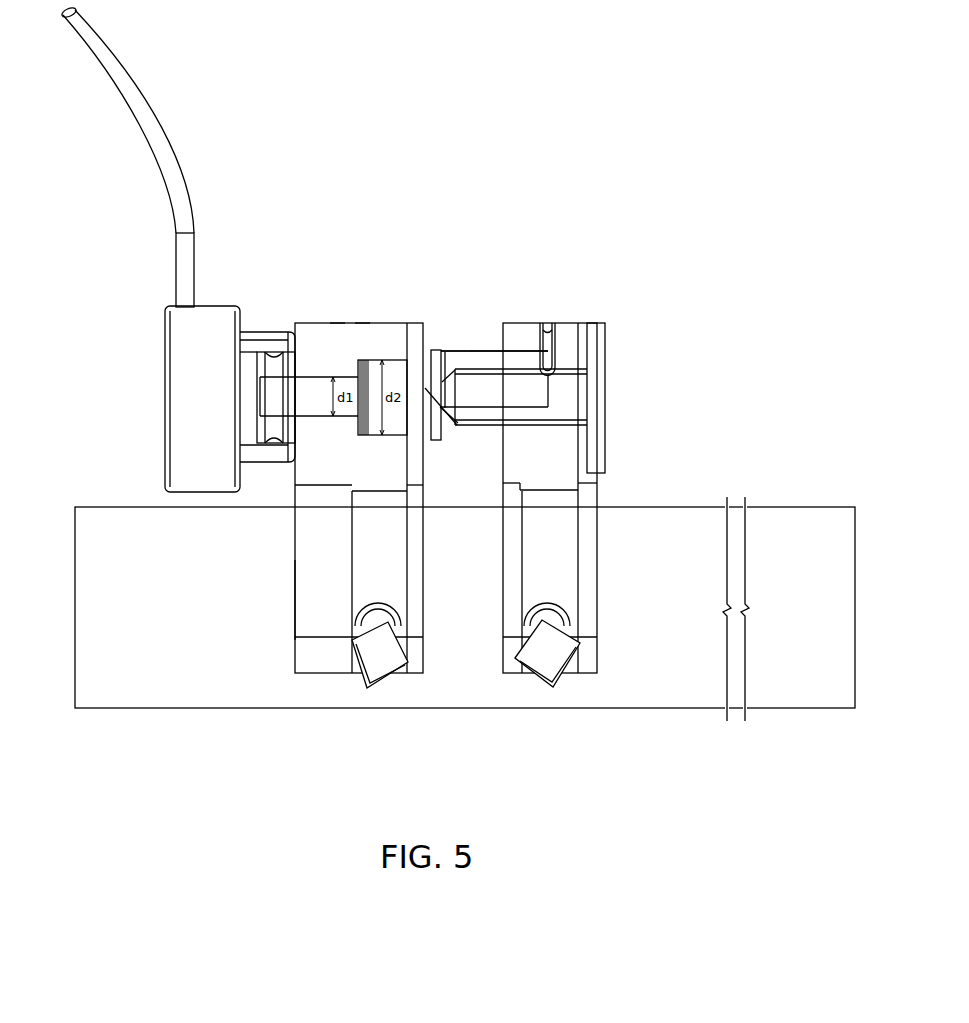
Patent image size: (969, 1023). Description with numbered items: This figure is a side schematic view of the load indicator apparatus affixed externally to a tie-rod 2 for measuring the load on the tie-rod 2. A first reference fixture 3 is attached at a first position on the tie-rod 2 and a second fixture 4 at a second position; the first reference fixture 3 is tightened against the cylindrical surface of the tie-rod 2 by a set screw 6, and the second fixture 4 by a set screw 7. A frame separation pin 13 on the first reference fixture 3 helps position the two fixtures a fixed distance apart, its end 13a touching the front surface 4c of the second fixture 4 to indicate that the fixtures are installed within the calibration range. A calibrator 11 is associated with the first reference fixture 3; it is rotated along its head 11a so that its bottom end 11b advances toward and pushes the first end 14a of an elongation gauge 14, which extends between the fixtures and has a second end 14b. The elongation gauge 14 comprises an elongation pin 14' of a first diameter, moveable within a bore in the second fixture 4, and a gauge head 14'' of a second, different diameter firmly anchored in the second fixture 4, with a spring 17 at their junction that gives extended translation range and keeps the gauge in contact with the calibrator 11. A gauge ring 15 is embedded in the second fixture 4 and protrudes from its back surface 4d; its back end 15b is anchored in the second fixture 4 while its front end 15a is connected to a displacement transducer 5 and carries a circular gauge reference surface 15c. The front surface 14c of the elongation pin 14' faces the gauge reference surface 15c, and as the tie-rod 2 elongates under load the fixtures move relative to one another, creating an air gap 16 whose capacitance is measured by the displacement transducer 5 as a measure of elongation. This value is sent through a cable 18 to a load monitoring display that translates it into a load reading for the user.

The tie-rod 2 is at (658, 711).
The first reference fixture 3 is at (595, 483).
The second fixture 4 is at (312, 673).
The front surface 4c is at (428, 378).
The back surface 4d is at (295, 597).
The displacement transducer 5 is at (211, 303).
The set screw 6 is at (533, 657).
The set screw 7 is at (380, 658).
The calibrator 11 is at (598, 380).
The head 11a is at (605, 325).
The bottom end 11b is at (443, 420).
The frame separation pin 13 is at (478, 352).
The end 13a is at (433, 352).
The elongation gauge 14 is at (312, 426).
The elongation pin 14' is at (331, 298).
The gauge head 14'' is at (382, 331).
The first end 14a is at (450, 352).
The second end 14b is at (260, 395).
The front surface 14c is at (260, 387).
The gauge ring 15 is at (260, 438).
The front end 15a is at (263, 443).
The back end 15b is at (325, 353).
The gauge reference surface 15c is at (257, 361).
The air gap 16 is at (260, 407).
The spring 17 is at (363, 355).
The cable 18 is at (112, 68).